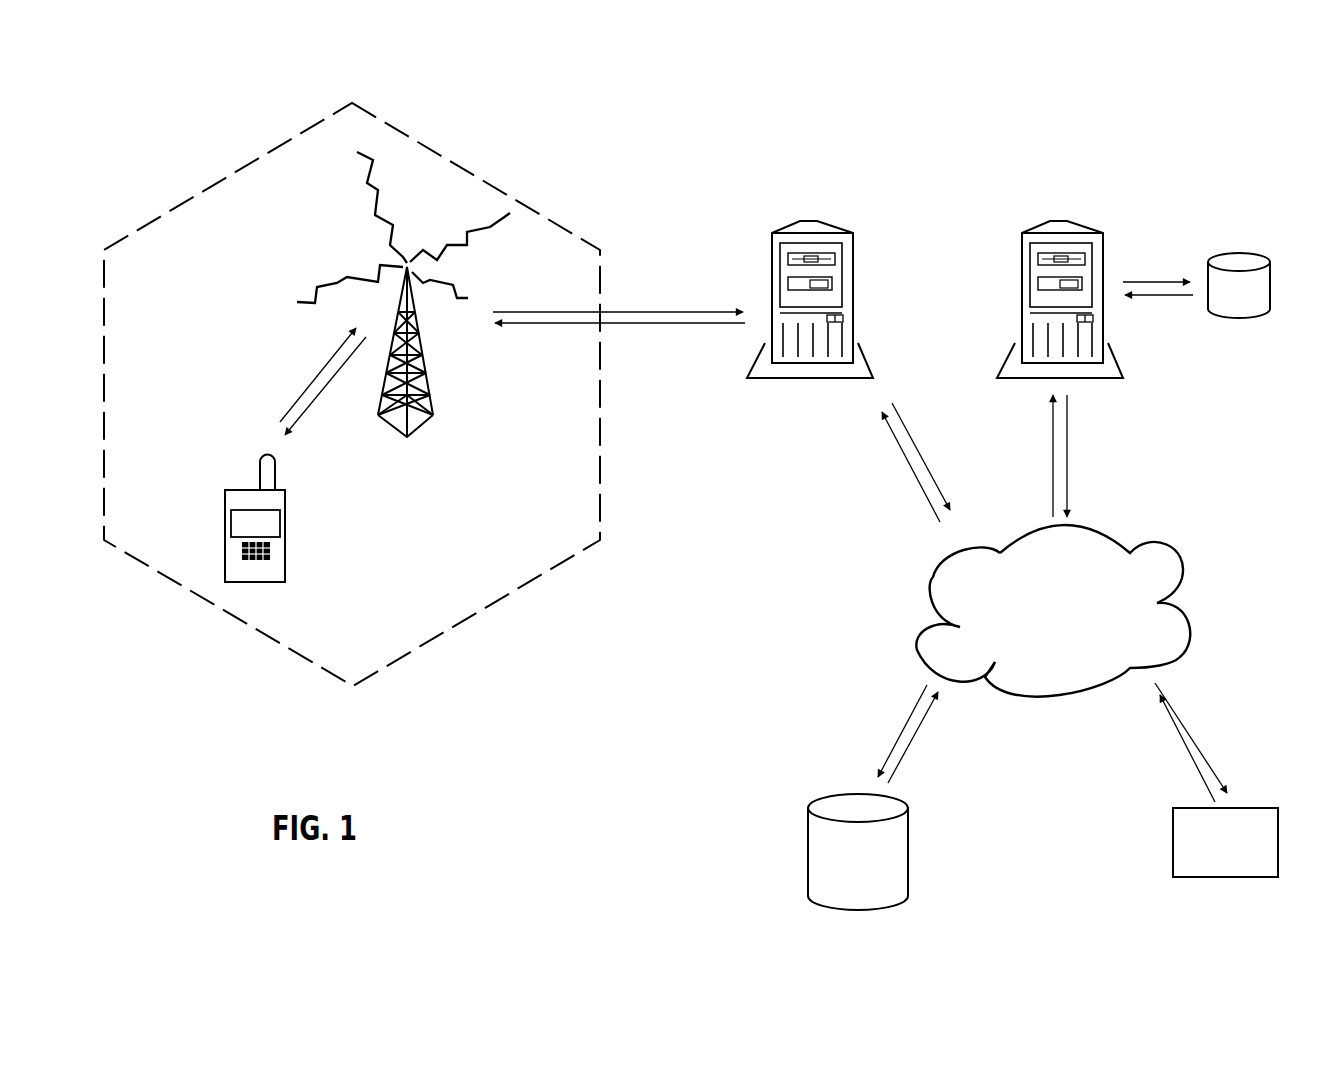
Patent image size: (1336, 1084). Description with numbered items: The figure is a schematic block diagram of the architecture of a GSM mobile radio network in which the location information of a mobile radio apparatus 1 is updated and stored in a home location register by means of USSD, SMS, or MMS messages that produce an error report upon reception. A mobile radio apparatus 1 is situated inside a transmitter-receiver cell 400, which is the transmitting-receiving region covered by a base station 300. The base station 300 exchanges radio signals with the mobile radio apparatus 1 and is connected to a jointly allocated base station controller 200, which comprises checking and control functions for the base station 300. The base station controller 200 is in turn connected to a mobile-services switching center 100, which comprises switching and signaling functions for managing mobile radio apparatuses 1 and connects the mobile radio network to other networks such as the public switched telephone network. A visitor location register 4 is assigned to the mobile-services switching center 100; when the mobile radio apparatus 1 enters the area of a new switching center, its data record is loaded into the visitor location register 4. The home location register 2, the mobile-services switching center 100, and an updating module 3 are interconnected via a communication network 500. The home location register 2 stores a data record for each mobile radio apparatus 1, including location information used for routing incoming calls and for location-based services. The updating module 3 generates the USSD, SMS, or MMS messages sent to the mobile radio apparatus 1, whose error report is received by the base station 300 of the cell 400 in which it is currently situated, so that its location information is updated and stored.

The mobile radio apparatus 1 is at (232, 567).
The home location register 2 is at (846, 883).
The updating module 3 is at (1228, 858).
The visitor location register 4 is at (1249, 311).
The mobile-services switching center 100 is at (1062, 223).
The base station controller 200 is at (813, 228).
The base station 300 is at (407, 266).
The transmitter-receiver cell 400 is at (467, 565).
The communication network 500 is at (1078, 625).